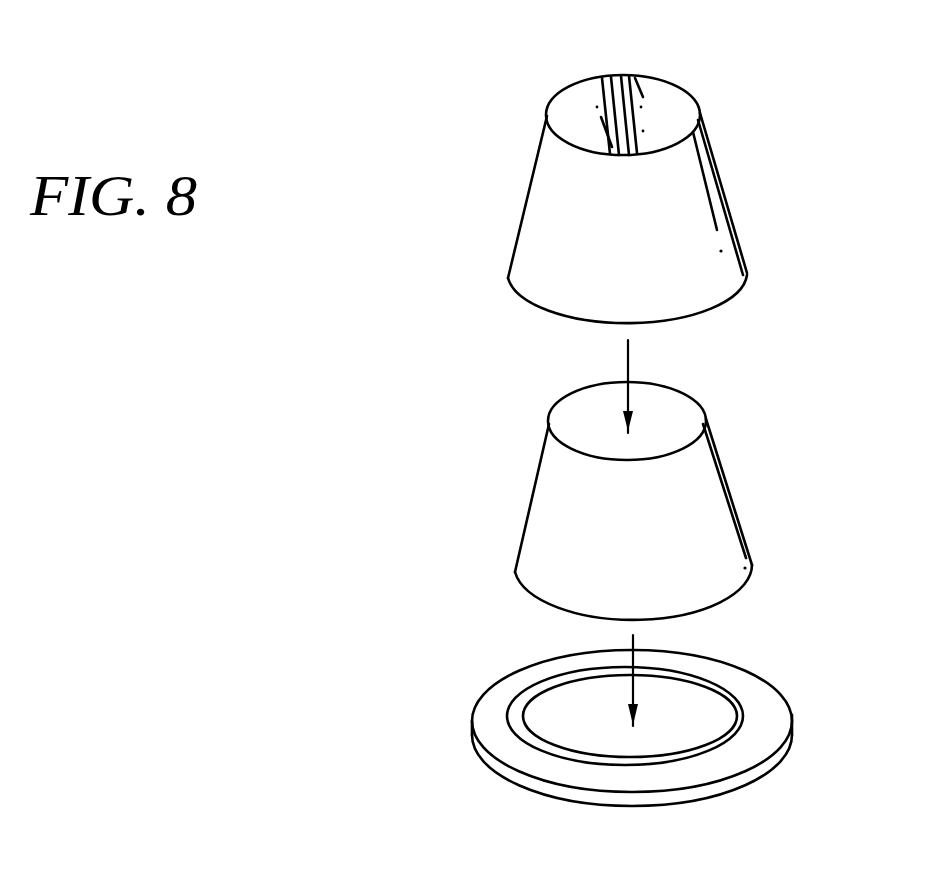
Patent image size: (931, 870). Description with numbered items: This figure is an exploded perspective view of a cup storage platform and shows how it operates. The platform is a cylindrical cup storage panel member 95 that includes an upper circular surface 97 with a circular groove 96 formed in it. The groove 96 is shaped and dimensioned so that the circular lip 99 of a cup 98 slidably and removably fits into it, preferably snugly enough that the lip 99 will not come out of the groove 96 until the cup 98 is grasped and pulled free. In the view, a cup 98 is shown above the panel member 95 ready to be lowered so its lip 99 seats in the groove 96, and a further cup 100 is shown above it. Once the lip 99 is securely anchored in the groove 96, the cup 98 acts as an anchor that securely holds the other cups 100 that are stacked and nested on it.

The cup 100 is at (520, 100).
The cup 98 is at (643, 501).
The circular lip 99 is at (553, 608).
The cylindrical cup storage panel member 95 is at (587, 724).
The circular groove 96 is at (737, 700).
The upper circular surface 97 is at (495, 738).